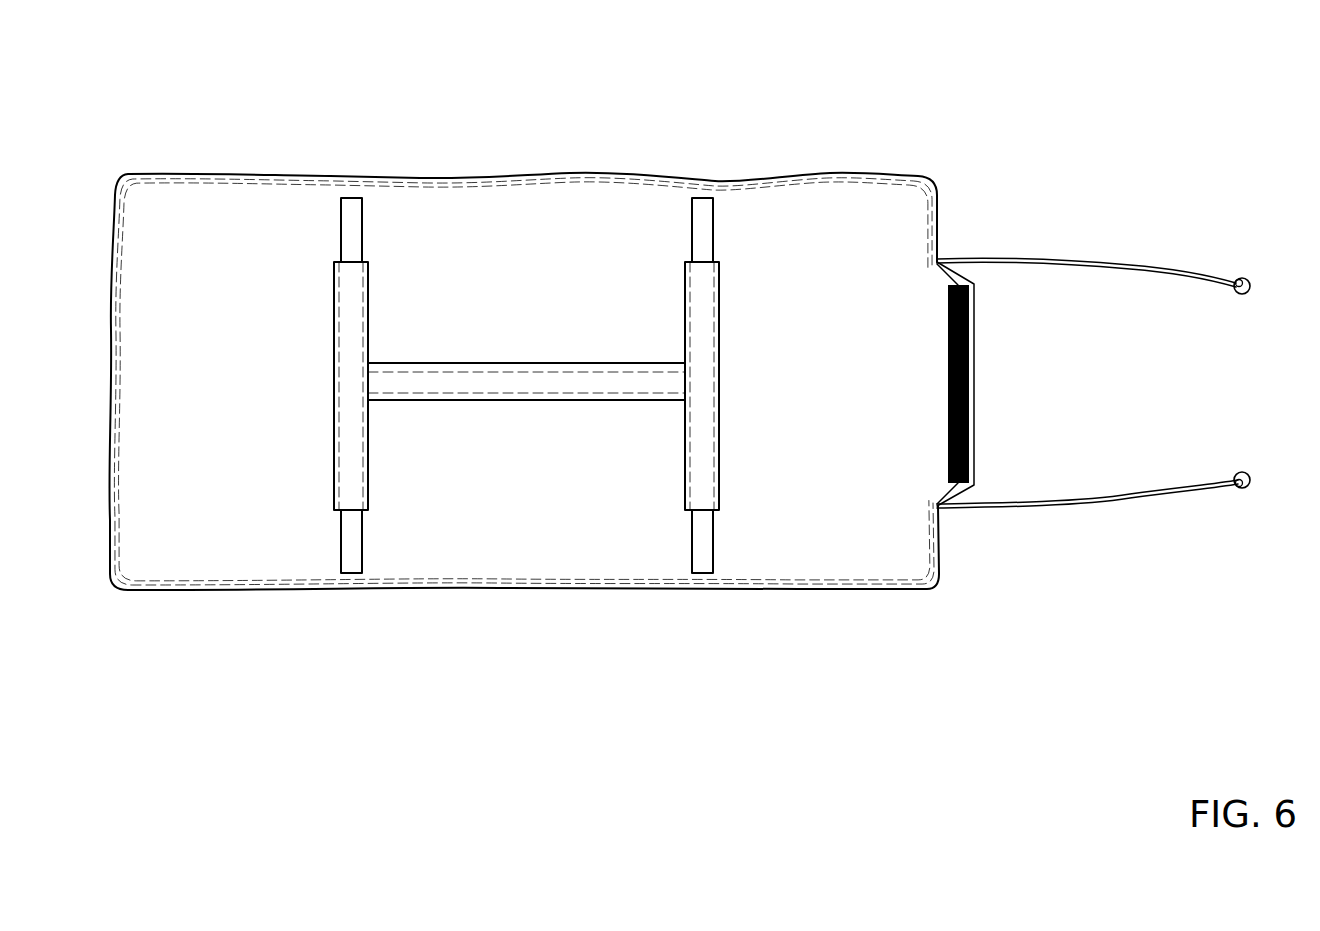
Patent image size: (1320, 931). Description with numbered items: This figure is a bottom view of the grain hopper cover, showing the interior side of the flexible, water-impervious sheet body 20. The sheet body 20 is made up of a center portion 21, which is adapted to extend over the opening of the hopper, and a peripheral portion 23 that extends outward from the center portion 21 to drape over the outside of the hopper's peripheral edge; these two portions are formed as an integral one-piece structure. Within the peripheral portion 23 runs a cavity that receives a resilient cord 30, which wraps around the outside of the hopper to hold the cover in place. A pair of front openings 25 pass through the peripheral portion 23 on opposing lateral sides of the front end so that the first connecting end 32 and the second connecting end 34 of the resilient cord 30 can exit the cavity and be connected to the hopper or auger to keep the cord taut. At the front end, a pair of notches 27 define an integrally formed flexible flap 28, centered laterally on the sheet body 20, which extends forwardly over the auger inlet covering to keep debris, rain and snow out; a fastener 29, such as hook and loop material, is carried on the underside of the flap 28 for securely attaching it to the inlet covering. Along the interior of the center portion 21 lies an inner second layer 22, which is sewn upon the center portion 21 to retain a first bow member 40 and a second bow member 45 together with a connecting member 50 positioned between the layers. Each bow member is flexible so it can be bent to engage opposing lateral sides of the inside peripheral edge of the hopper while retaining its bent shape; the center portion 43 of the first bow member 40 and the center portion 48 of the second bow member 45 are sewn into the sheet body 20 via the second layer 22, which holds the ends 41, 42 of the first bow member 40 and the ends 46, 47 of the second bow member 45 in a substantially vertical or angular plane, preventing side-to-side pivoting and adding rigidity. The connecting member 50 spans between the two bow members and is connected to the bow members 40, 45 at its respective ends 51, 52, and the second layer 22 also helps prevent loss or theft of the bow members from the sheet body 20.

The sheet body 20 is at (490, 180).
The center portion 21 is at (310, 355).
The second layer 22 is at (700, 323).
The peripheral portion 23 is at (497, 205).
The front openings 25 is at (945, 262).
The notches 27 is at (965, 285).
The flap 28 is at (975, 405).
The fastener 29 is at (968, 350).
The resilient cord 30 is at (789, 178).
The first connecting end 32 is at (1247, 488).
The second connecting end 34 is at (1249, 279).
The first bow member 40 is at (713, 538).
The end of first bow member 41 is at (702, 562).
The end of first bow member 42 is at (703, 216).
The center portion of first bow member 43 is at (706, 383).
The second bow member 45 is at (362, 540).
The end of second bow member 46 is at (349, 558).
The end of second bow member 47 is at (350, 213).
The center portion of second bow member 48 is at (325, 396).
The connecting member 50 is at (497, 400).
The end of connecting member 51 is at (663, 384).
The end of connecting member 52 is at (397, 378).